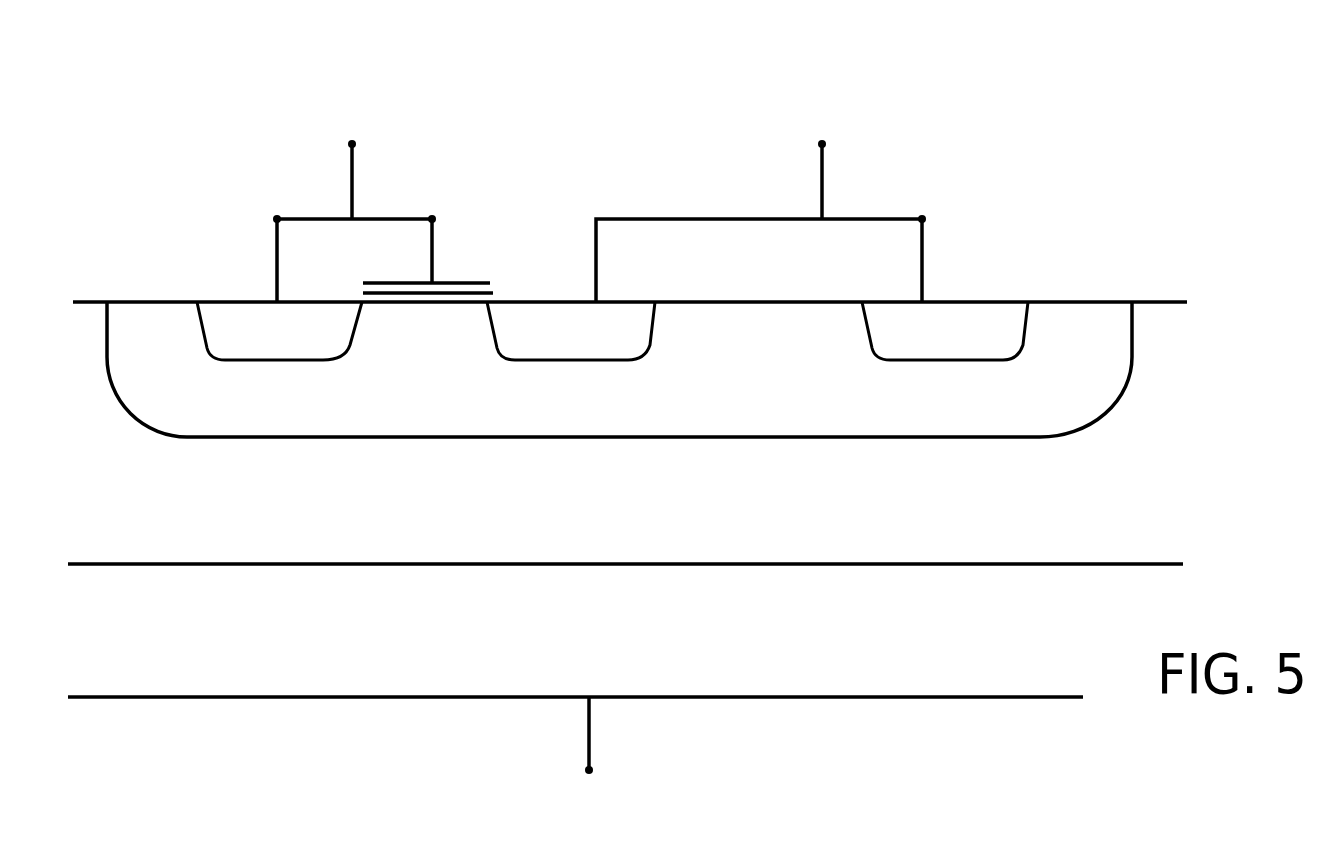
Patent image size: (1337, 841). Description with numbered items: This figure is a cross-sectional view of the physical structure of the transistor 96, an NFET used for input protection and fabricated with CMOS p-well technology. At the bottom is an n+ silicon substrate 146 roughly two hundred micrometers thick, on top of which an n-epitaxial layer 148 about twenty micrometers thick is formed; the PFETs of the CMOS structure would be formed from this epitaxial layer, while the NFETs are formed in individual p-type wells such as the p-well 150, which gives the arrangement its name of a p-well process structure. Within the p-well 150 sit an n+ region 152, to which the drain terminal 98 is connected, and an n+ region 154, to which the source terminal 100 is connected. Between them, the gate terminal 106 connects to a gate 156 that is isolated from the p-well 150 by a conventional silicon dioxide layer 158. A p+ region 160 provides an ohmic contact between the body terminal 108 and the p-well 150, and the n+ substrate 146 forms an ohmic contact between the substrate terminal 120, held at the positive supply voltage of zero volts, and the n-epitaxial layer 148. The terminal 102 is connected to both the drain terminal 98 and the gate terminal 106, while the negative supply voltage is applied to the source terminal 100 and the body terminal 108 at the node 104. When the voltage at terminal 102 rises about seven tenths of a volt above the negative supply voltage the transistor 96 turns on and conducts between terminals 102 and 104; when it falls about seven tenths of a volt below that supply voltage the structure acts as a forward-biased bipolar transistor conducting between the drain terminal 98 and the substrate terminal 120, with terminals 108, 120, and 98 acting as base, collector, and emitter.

The transistor 96 is at (138, 106).
The drain terminal 98 is at (277, 219).
The source terminal 100 is at (597, 219).
The terminal 102 is at (352, 144).
The terminal 104 is at (822, 144).
The gate terminal 106 is at (432, 219).
The body terminal 108 is at (922, 219).
The power supply terminal 120 is at (589, 770).
The n+ silicon substrate 146 is at (183, 663).
The n-epitaxial layer 148 is at (183, 523).
The p-well 150 is at (590, 413).
The n+ region 152 is at (327, 348).
The n+ region 154 is at (618, 348).
The gate 156 is at (491, 283).
The silicon dioxide layer 158 is at (490, 294).
The p+ region 160 is at (992, 348).